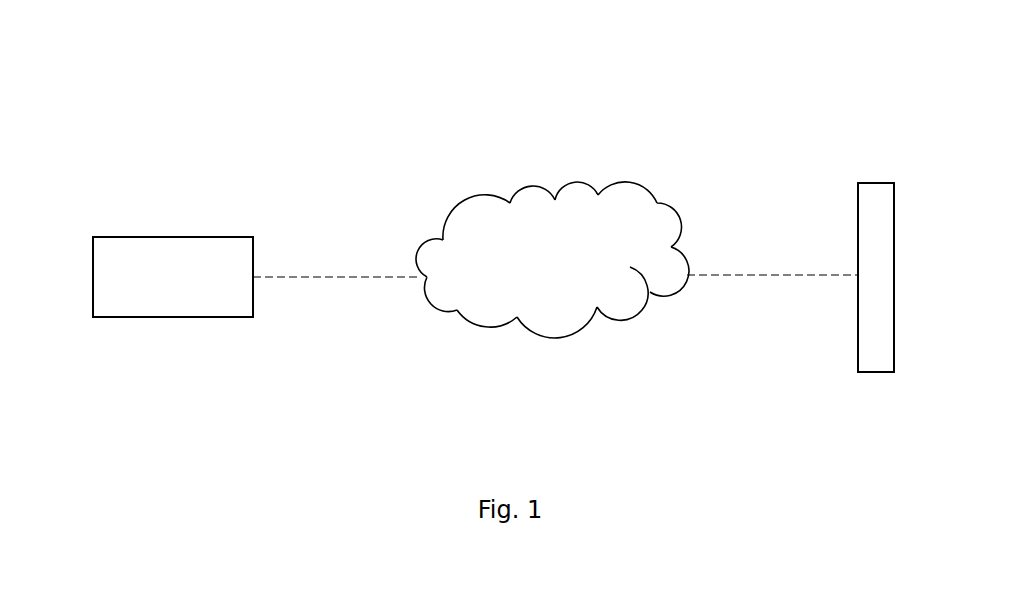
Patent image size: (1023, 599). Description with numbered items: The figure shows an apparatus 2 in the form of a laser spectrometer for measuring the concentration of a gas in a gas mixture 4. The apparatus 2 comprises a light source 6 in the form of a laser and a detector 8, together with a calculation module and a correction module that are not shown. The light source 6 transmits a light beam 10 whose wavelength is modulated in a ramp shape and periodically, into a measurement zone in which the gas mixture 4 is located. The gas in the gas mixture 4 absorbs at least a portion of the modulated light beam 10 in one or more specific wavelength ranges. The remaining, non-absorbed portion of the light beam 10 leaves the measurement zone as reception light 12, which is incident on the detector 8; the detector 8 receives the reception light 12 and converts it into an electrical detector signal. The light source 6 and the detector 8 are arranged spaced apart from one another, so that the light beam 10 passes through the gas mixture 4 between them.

The apparatus 2 is at (327, 118).
The gas mixture 4 is at (555, 192).
The light source 6 is at (151, 237).
The detector 8 is at (880, 183).
The light beam 10 is at (328, 273).
The reception light 12 is at (740, 273).